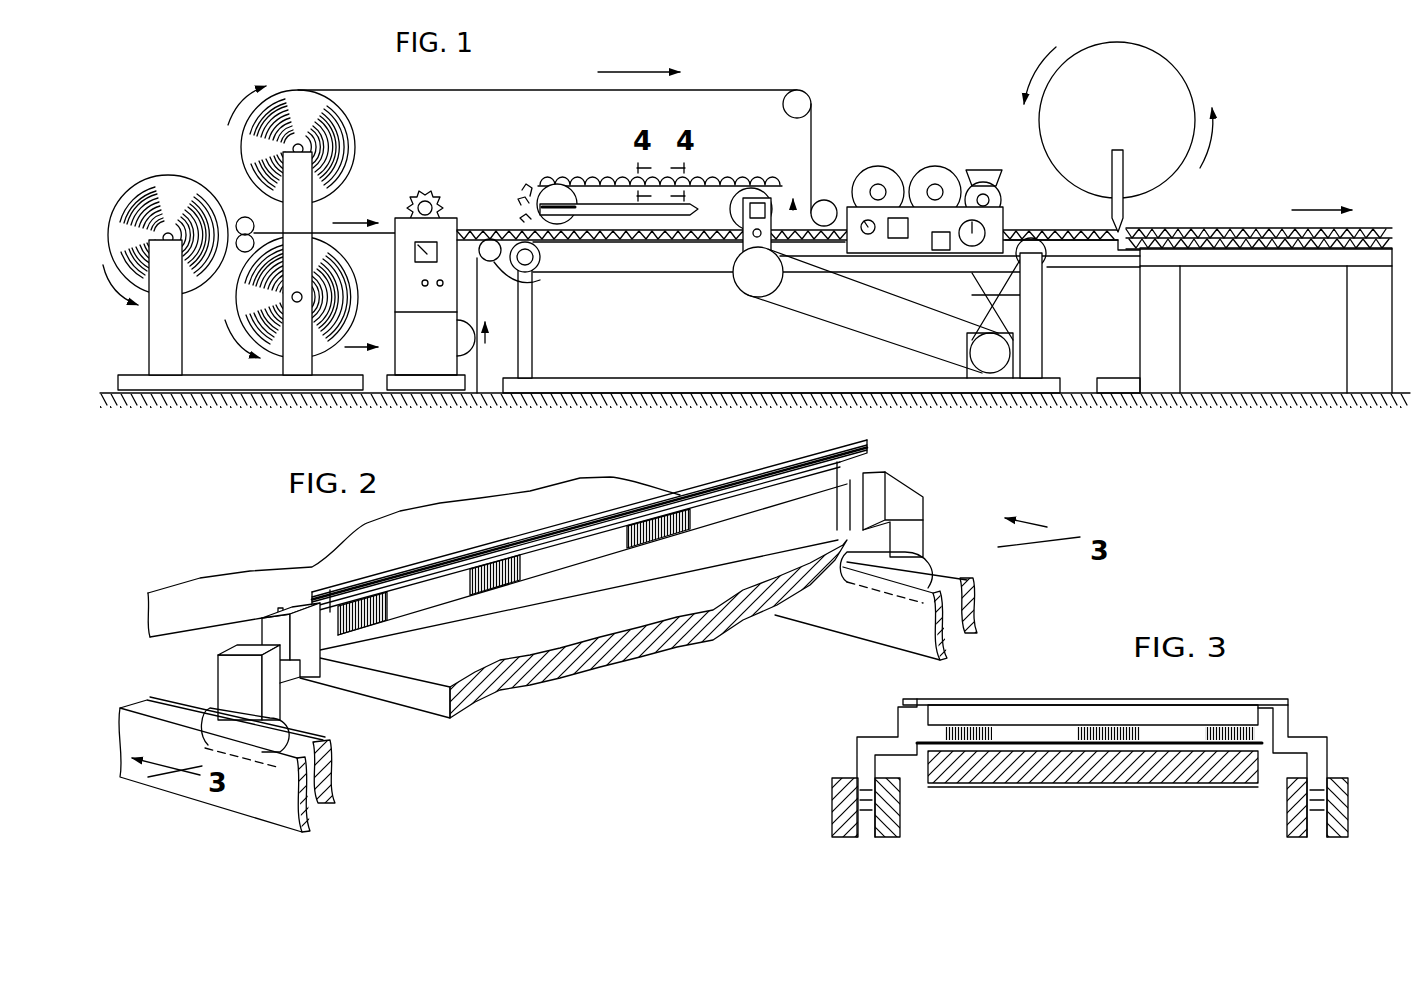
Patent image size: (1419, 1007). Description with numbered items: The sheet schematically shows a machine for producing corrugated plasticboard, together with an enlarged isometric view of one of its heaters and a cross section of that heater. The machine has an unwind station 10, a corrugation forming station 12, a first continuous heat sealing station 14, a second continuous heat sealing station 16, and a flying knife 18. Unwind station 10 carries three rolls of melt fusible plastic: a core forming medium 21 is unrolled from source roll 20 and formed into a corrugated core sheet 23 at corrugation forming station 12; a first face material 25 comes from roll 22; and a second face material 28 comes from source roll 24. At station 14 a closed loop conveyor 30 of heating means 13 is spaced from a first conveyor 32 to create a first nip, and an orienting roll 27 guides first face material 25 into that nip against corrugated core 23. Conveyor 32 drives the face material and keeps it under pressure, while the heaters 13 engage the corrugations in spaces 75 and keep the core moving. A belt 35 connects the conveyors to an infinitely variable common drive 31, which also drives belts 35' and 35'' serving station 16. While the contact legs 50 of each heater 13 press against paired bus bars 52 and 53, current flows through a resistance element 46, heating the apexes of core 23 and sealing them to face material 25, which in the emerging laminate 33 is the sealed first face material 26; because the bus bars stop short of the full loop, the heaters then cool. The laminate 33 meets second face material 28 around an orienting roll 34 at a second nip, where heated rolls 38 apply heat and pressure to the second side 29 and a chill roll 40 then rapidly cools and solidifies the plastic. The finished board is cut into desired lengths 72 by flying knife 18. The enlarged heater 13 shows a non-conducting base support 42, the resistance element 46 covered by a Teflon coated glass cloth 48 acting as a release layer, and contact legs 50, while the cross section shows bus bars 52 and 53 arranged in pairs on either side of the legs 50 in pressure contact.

In FIG. 1, the unwind station 10 is at (200, 157).
In FIG. 1, the corrugation forming station 12 is at (394, 176).
In FIG. 1, the heating means 13 is at (765, 180).
In FIG. 2, the heating means 13 is at (714, 466).
In FIG. 1, the first continuous heat sealing station 14 is at (494, 151).
In FIG. 1, the second continuous heat sealing station 16 is at (947, 130).
In FIG. 1, the flying knife 18 is at (1129, 101).
In FIG. 1, the source roll 20 is at (180, 210).
In FIG. 1, the core forming medium 21 is at (183, 307).
In FIG. 1, the roll 22 is at (340, 300).
In FIG. 1, the corrugated core sheet 23 is at (470, 228).
In FIG. 1, the source roll 24 is at (311, 123).
In FIG. 1, the first face material 25 is at (483, 292).
In FIG. 1, the first face material 26 is at (692, 274).
In FIG. 1, the roll 27 is at (533, 289).
In FIG. 1, the second face material 28 is at (768, 90).
In FIG. 1, the second side 29 is at (842, 200).
In FIG. 1, the closed loop conveyor 30 is at (535, 183).
In FIG. 2, the closed loop conveyor 30 is at (628, 615).
In FIG. 3, the closed loop conveyor 30 is at (1142, 778).
In FIG. 1, the common drive 31 is at (985, 352).
In FIG. 1, the first conveyor 32 is at (576, 276).
In FIG. 1, the laminate 33 is at (775, 293).
In FIG. 1, the roll 34 is at (823, 200).
In FIG. 1, the belt 35 is at (873, 311).
In FIG. 1, the belt 35' is at (1041, 306).
In FIG. 1, the belt 35'' is at (1044, 300).
In FIG. 1, the heated rolls 38 is at (916, 182).
In FIG. 1, the chill roll 40 is at (1006, 194).
In FIG. 2, the non-conducting base support 42 is at (467, 610).
In FIG. 3, the non-conducting base support 42 is at (1262, 735).
In FIG. 2, the resistance element 46 is at (278, 608).
In FIG. 3, the resistance element 46 is at (1015, 715).
In FIG. 2, the Teflon coated glass cloth 48 is at (366, 578).
In FIG. 2, the contact legs 50 is at (309, 701).
In FIG. 3, the contact legs 50 is at (843, 743).
In FIG. 1, the bus bar 52 is at (621, 204).
In FIG. 2, the bus bar 52 is at (330, 770).
In FIG. 3, the bus bar 52 is at (840, 838).
In FIG. 1, the bus bar 53 is at (678, 210).
In FIG. 2, the bus bar 53 is at (967, 618).
In FIG. 3, the bus bar 53 is at (1297, 838).
In FIG. 1, the desired lengths 72 is at (1209, 216).
In FIG. 1, the spaces 75 is at (490, 239).